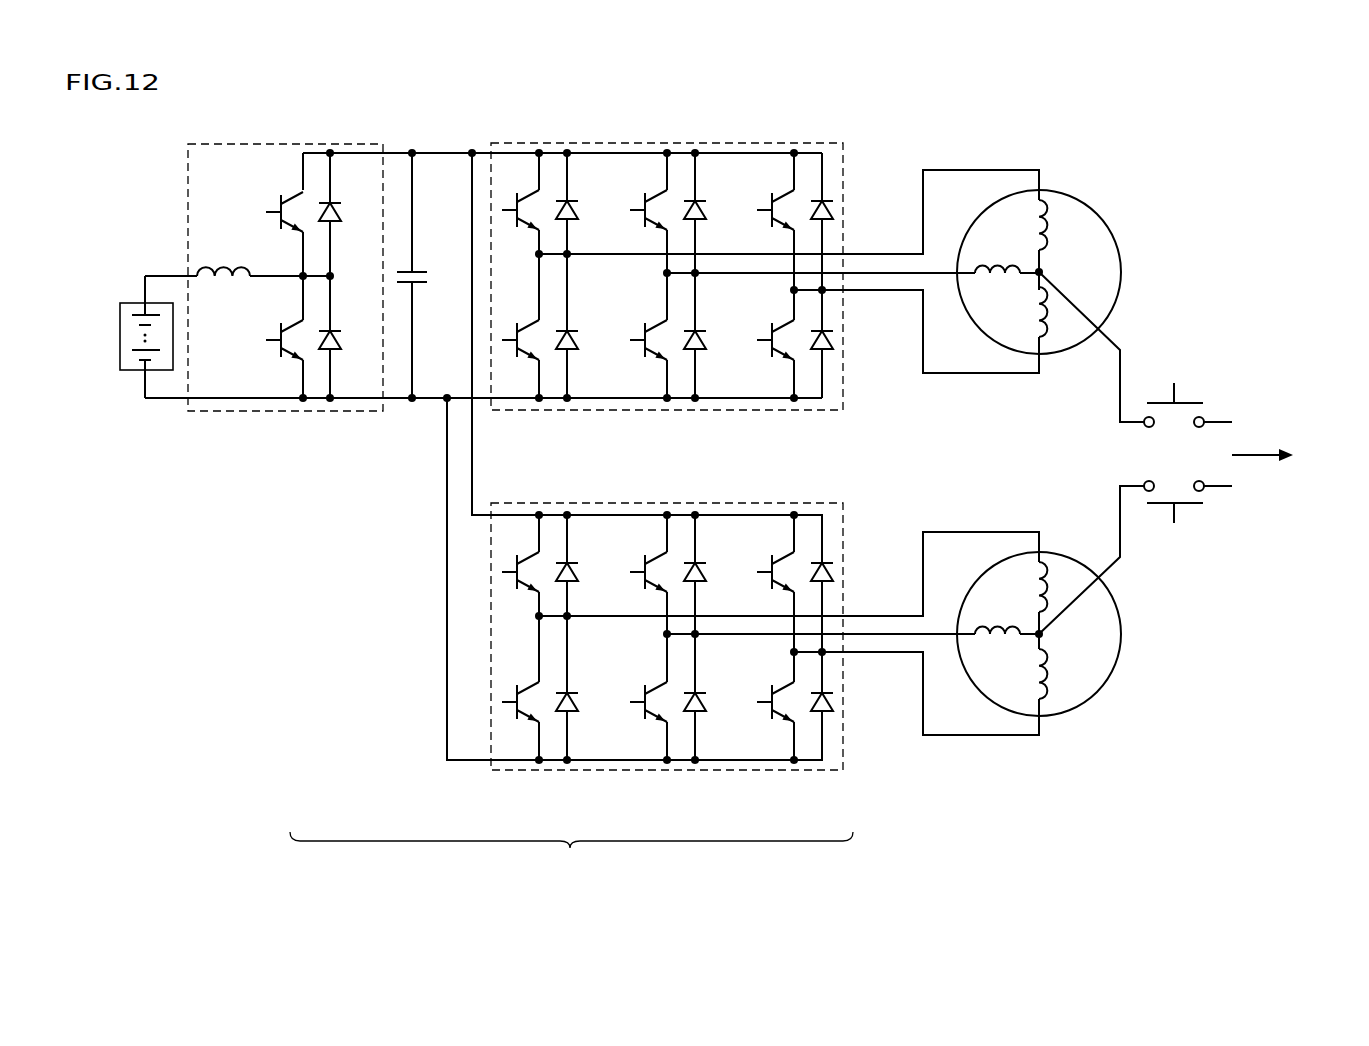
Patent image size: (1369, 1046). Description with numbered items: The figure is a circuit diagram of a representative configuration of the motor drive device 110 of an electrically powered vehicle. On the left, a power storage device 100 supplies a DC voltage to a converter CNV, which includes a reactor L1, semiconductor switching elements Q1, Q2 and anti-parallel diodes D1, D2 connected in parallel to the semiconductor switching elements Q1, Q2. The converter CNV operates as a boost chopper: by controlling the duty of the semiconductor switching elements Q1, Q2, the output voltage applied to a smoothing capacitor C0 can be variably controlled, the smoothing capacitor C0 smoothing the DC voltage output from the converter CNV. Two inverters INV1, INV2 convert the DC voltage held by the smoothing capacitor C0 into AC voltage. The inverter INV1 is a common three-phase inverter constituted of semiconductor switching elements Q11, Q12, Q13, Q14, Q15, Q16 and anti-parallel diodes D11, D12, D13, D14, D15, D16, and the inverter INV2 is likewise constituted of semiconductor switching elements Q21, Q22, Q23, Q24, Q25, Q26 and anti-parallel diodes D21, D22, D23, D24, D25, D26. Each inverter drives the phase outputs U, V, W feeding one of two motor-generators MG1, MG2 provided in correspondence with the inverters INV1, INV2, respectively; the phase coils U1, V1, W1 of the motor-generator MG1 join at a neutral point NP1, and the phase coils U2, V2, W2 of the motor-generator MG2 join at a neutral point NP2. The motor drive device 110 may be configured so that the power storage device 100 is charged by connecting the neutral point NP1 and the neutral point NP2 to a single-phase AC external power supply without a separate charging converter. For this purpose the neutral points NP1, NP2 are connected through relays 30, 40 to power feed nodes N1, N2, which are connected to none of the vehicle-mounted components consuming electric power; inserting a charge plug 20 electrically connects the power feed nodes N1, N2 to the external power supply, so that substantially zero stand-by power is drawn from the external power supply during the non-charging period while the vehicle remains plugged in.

The power storage device 100 is at (120, 336).
The converter CNV is at (285, 142).
The reactor L1 is at (217, 263).
The semiconductor switching element Q1 is at (293, 195).
The semiconductor switching element Q2 is at (293, 322).
The anti-parallel diode D1 is at (340, 217).
The anti-parallel diode D2 is at (340, 346).
The smoothing capacitor C0 is at (420, 283).
The inverter INV1 is at (832, 140).
The inverter INV2 is at (832, 503).
The semiconductor switching element Q11 is at (527, 193).
The semiconductor switching element Q12 is at (528, 357).
The semiconductor switching element Q13 is at (655, 193).
The semiconductor switching element Q14 is at (656, 357).
The semiconductor switching element Q15 is at (783, 193).
The semiconductor switching element Q16 is at (783, 357).
The anti-parallel diode D11 is at (577, 215).
The anti-parallel diode D12 is at (577, 346).
The anti-parallel diode D13 is at (705, 215).
The anti-parallel diode D14 is at (705, 346).
The anti-parallel diode D15 is at (832, 215).
The anti-parallel diode D16 is at (832, 346).
The semiconductor switching element Q21 is at (527, 555).
The semiconductor switching element Q22 is at (528, 719).
The semiconductor switching element Q23 is at (655, 555).
The semiconductor switching element Q24 is at (656, 719).
The semiconductor switching element Q25 is at (783, 555).
The semiconductor switching element Q26 is at (783, 719).
The anti-parallel diode D21 is at (577, 577).
The anti-parallel diode D22 is at (577, 710).
The anti-parallel diode D23 is at (705, 577).
The anti-parallel diode D24 is at (705, 710).
The anti-parallel diode D25 is at (832, 577).
The anti-parallel diode D26 is at (832, 710).
The U-phase arm output U is at (789, 393).
The V-phase arm output V is at (821, 400).
The W-phase arm output W is at (902, 506).
The motor-generator MG1 is at (1082, 200).
The motor-generator MG2 is at (1080, 705).
The U-phase coil of MG1 U1 is at (1050, 237).
The V-phase coil of MG1 V1 is at (1000, 262).
The W-phase coil of MG1 W1 is at (1035, 318).
The U-phase coil of MG2 U2 is at (1035, 588).
The V-phase coil of MG2 V2 is at (997, 640).
The W-phase coil of MG2 W2 is at (1050, 657).
The neutral point NP1 is at (1045, 273).
The neutral point NP2 is at (1045, 635).
The relay 30 is at (1205, 410).
The relay 40 is at (1205, 497).
The power feed node N1 is at (1215, 422).
The power feed node N2 is at (1215, 484).
The charge plug 20 is at (1296, 454).
The motor drive device 110 is at (571, 855).